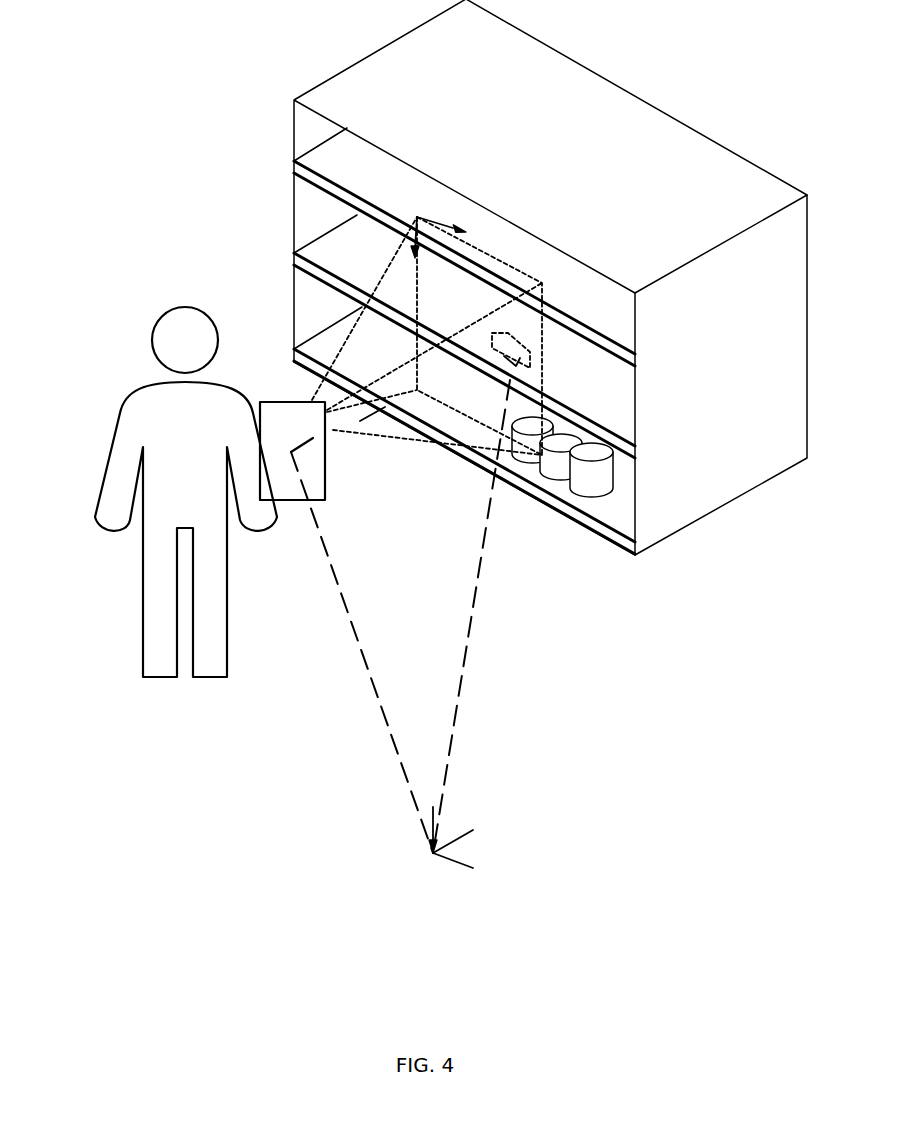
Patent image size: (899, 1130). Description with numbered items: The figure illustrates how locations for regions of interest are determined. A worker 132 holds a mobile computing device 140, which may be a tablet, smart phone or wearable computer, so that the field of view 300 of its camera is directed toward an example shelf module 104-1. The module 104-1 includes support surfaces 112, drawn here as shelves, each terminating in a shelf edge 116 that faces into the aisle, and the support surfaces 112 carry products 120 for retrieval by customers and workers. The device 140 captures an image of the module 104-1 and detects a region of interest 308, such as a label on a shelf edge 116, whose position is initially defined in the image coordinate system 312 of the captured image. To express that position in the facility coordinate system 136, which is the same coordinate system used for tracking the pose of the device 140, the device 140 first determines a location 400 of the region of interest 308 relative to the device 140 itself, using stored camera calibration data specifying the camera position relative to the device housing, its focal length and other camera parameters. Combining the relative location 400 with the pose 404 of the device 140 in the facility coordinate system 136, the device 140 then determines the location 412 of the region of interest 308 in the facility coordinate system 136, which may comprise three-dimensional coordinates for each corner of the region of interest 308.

The shelf module 104-1 is at (549, 309).
The support surface 112 is at (347, 163).
The shelf edge 116 is at (591, 338).
The product 120 is at (590, 483).
The worker 132 is at (143, 578).
The facility coordinate system 136 is at (433, 860).
The mobile computing device 140 is at (273, 402).
The field of view 300 is at (390, 437).
The region of interest 308 is at (512, 348).
The image coordinate system 312 is at (417, 217).
The location of the ROI relative to the device 400 is at (430, 390).
The pose of the device 404 is at (362, 652).
The location of the ROI in the facility coordinate system 412 is at (475, 616).